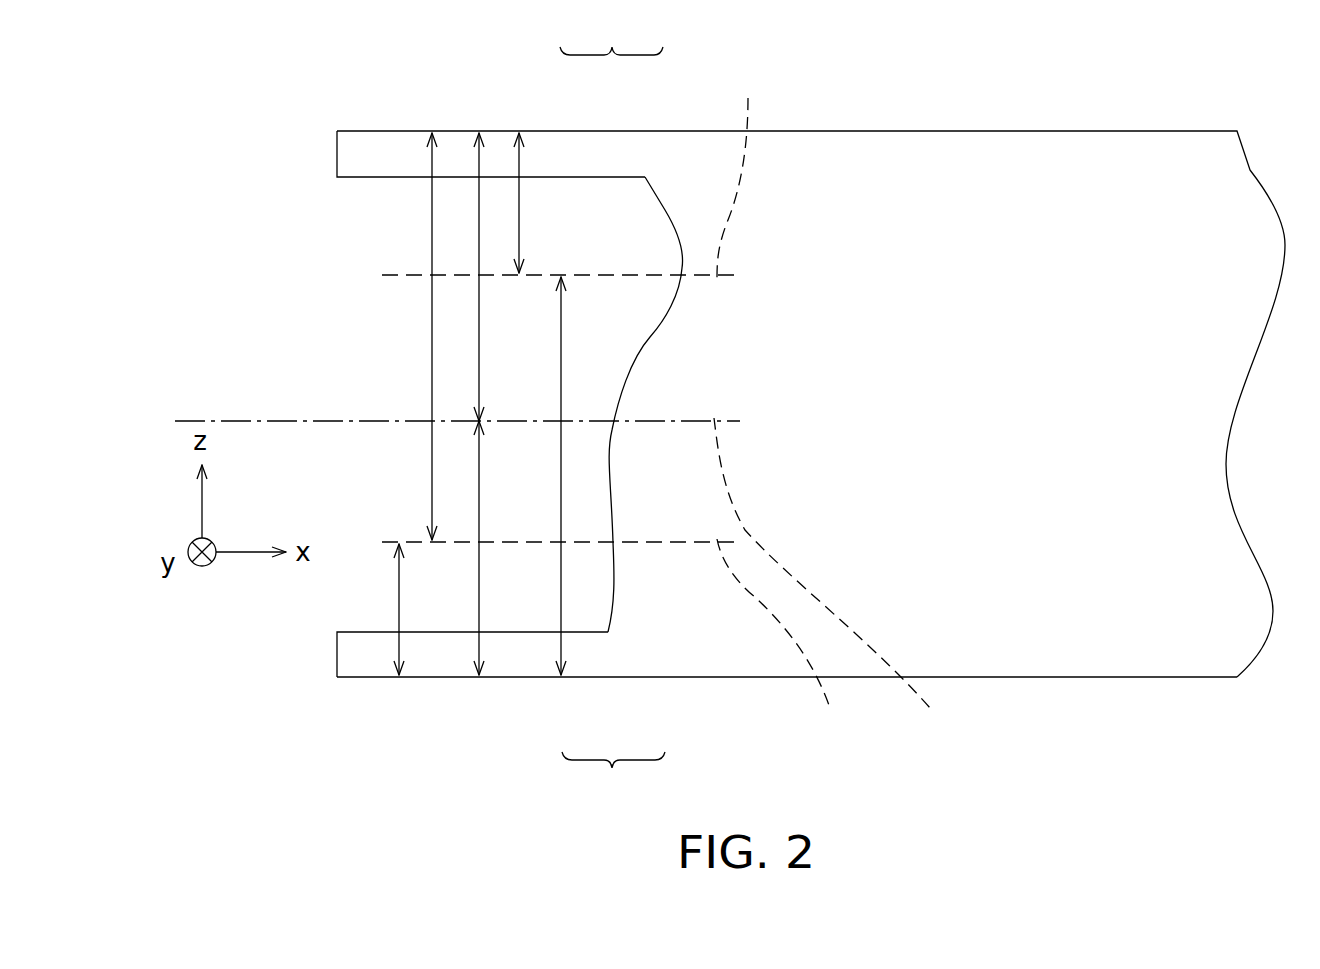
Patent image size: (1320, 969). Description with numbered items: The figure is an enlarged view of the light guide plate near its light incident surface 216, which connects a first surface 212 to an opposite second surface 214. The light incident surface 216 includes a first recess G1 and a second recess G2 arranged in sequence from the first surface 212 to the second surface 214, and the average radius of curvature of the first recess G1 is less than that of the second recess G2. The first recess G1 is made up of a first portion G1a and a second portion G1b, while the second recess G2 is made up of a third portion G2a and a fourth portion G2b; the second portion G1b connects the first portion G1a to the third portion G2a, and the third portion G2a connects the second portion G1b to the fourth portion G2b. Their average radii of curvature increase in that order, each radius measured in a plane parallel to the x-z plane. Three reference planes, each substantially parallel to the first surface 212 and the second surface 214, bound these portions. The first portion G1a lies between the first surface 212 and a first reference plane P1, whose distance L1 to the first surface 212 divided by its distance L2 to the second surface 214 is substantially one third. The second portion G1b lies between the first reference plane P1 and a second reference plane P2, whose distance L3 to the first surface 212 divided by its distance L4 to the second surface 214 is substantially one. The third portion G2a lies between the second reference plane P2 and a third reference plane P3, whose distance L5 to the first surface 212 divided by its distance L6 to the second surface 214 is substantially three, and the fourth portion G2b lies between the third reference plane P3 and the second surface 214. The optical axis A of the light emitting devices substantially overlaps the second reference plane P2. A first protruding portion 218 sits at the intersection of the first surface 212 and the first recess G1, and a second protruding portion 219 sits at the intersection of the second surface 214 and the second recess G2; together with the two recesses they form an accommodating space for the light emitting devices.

The first surface 212 is at (900, 131).
The second surface 214 is at (1048, 677).
The light incident surface 216 is at (626, 377).
The first protruding portion 218 is at (393, 150).
The second protruding portion 219 is at (372, 660).
The first recess G1 is at (611, 33).
The first portion G1a is at (672, 232).
The second portion G1b is at (651, 339).
The second recess G2 is at (613, 779).
The third portion G2a is at (614, 585).
The fourth portion G2b is at (607, 512).
The first reference plane P1 is at (740, 169).
The second reference plane P2 is at (827, 585).
The third reference plane P3 is at (780, 645).
The optical axis A is at (290, 421).
The distance from the first reference plane to the first surface L1 is at (534, 203).
The distance from the first reference plane to the second surface L2 is at (577, 476).
The distance from the second reference plane to the first surface L3 is at (495, 277).
The distance from the second reference plane to the second surface L4 is at (495, 548).
The distance from the third reference plane to the first surface L5 is at (446, 336).
The distance from the third reference plane to the second surface L6 is at (414, 609).